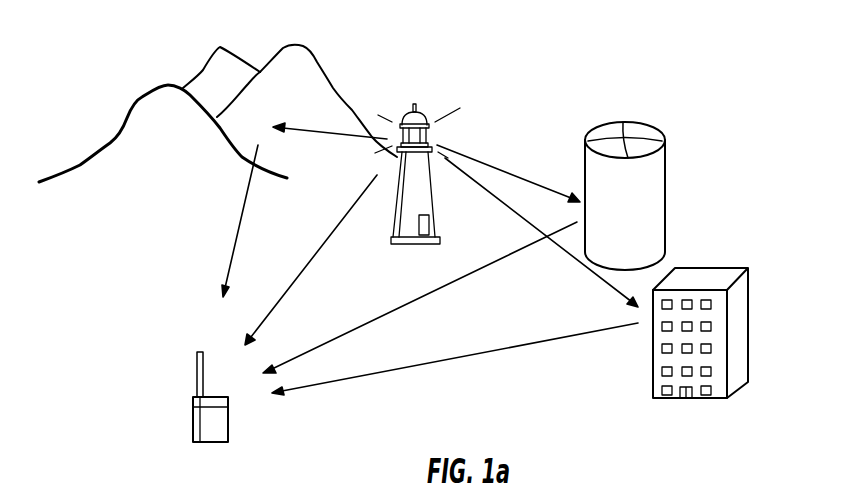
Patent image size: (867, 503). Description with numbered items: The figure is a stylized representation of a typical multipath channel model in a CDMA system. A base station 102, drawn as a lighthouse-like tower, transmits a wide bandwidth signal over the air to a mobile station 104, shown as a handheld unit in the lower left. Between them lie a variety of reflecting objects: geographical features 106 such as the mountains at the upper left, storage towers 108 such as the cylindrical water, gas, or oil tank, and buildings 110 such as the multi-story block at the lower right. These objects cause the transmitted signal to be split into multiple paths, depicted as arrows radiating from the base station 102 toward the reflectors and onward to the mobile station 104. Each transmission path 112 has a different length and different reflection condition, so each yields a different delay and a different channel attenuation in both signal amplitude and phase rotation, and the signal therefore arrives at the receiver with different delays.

The base station 102 is at (425, 110).
The mobile station 104 is at (228, 428).
The geographical features 106 is at (310, 50).
The storage towers 108 is at (645, 123).
The buildings 110 is at (710, 268).
The transmission path 112 is at (333, 232).